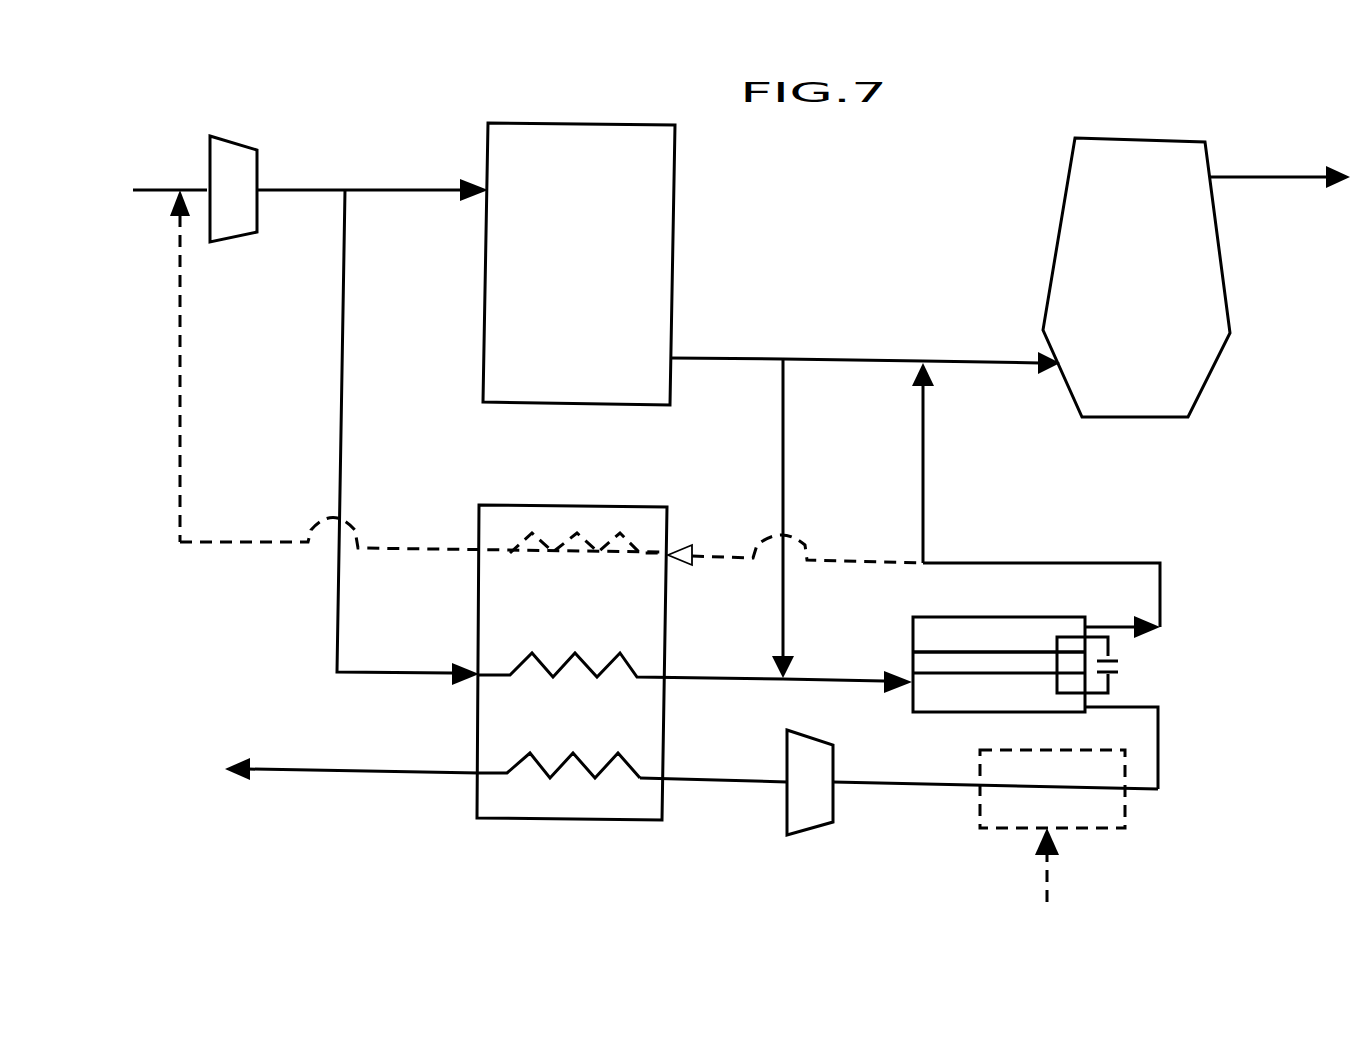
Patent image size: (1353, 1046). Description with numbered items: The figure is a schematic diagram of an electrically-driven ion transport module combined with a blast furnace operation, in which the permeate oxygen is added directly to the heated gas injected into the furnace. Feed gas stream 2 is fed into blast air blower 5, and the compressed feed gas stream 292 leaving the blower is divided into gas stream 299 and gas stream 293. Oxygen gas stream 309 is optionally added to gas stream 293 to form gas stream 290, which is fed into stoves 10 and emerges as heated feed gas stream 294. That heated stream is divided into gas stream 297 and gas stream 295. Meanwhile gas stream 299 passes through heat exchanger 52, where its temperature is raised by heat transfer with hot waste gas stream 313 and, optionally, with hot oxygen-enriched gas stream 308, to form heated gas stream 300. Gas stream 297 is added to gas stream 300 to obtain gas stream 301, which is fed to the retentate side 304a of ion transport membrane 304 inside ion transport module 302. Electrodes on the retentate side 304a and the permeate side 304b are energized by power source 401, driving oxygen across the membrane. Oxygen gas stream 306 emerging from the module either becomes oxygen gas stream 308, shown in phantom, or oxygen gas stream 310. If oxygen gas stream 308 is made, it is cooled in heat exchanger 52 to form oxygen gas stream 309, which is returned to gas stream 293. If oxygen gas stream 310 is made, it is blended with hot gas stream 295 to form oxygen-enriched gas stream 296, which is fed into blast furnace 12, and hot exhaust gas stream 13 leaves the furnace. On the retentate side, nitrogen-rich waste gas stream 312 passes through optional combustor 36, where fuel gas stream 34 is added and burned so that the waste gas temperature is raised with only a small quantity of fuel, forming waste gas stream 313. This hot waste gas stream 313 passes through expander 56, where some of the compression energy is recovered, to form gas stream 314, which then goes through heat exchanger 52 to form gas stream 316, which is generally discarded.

The feed gas stream 2 is at (162, 191).
The blast air blower 5 is at (248, 145).
The stoves 10 is at (675, 160).
The blast furnace 12 is at (1068, 180).
The hot exhaust gas stream 13 is at (1300, 170).
The fuel gas stream 34 is at (1050, 873).
The combustor 36 is at (1125, 820).
The heat exchanger 52 is at (605, 822).
The expander 56 is at (805, 836).
The gas stream 290 is at (201, 188).
The compressed feed gas stream 292 is at (283, 190).
The gas stream 293 is at (415, 190).
The heated feed gas stream 294 is at (757, 318).
The gas stream 295 is at (877, 358).
The oxygen-enriched gas stream 296 is at (998, 362).
The gas stream 297 is at (783, 465).
The gas stream 299 is at (340, 365).
The heated gas stream 300 is at (738, 648).
The gas stream 301 is at (830, 680).
The ion transport module 302 is at (940, 712).
The ion transport membrane 304 is at (910, 660).
The retentate side 304a is at (960, 672).
The permeate side 304b is at (1013, 652).
The oxygen gas stream 306 is at (1130, 567).
The oxygen gas stream 308 is at (882, 515).
The oxygen gas stream 309 is at (178, 392).
The oxygen gas stream 310 is at (923, 442).
The nitrogen-rich waste gas stream 312 is at (1158, 750).
The waste gas stream 313 is at (922, 788).
The gas stream 314 is at (731, 784).
The gas stream 316 is at (365, 772).
The power source 401 is at (1115, 690).